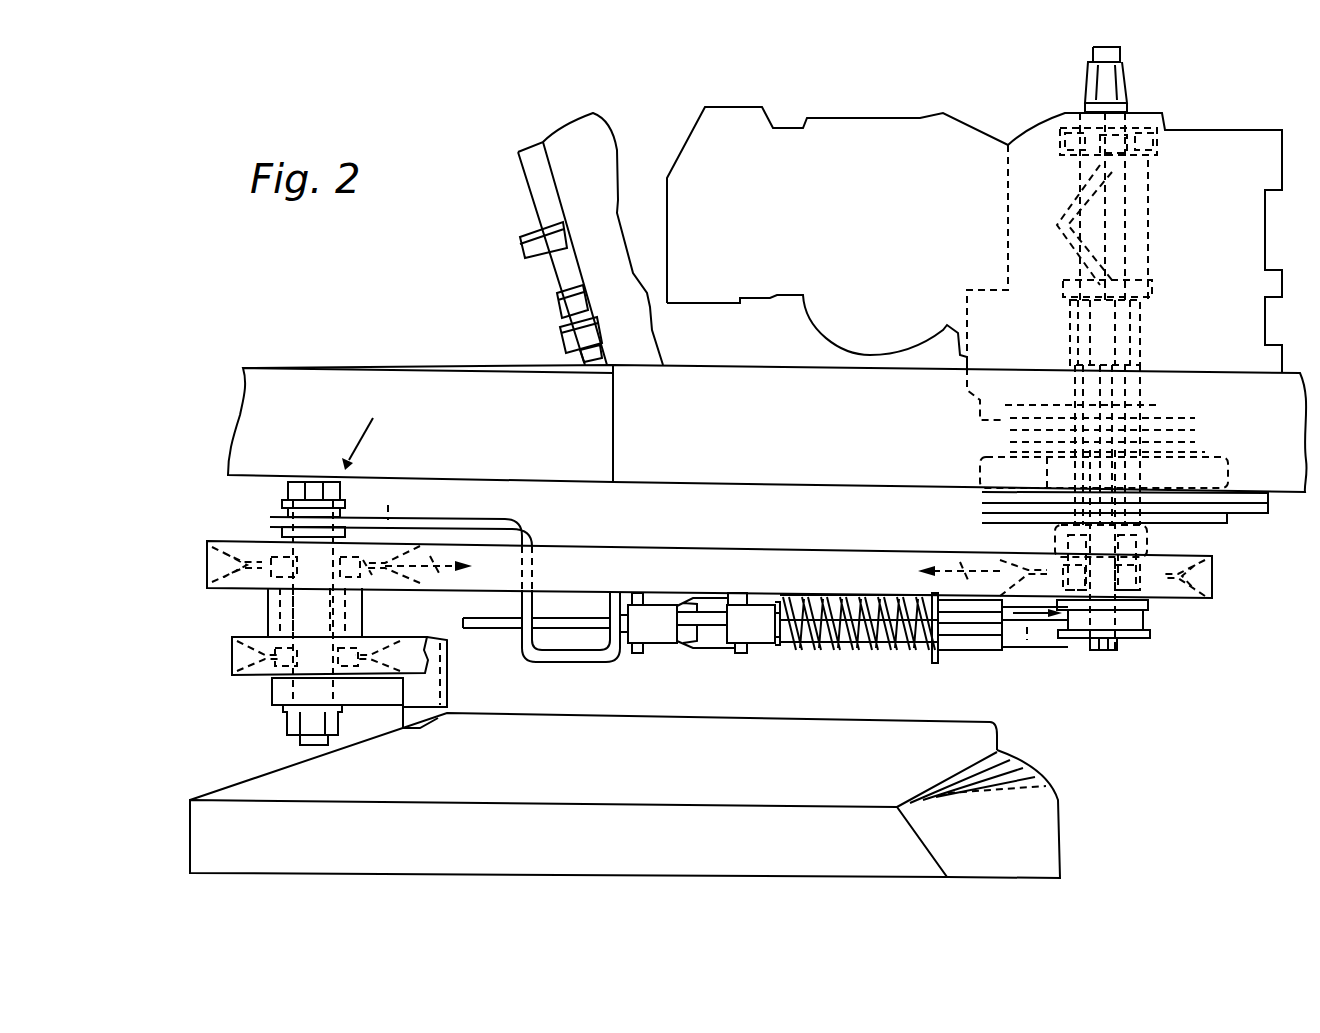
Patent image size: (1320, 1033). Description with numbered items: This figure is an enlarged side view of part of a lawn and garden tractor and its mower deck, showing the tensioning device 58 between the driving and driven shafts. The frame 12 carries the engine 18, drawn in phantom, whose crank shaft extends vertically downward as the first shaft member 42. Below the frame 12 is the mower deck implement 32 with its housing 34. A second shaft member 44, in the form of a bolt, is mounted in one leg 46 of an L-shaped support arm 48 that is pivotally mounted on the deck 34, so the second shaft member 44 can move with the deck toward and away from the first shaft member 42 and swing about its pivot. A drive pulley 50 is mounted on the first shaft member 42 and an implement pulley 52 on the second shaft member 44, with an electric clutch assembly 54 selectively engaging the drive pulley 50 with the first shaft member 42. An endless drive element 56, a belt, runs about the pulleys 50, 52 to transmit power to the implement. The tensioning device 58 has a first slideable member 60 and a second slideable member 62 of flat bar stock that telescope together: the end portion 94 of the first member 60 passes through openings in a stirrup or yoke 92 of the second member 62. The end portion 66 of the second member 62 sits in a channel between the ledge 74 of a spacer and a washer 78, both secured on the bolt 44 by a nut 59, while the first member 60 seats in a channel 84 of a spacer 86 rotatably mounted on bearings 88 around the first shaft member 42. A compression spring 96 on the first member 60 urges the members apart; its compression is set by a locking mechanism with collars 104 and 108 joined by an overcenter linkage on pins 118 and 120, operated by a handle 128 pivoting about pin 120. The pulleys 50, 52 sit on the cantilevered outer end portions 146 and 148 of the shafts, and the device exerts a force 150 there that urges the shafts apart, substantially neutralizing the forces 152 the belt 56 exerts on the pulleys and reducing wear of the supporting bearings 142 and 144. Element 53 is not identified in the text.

The frame 12 is at (506, 416).
The engine 18 is at (1228, 229).
The mower deck implement 32 is at (1092, 807).
The housing 34 is at (720, 779).
The first shaft member 42 is at (1175, 452).
The second shaft member 44 is at (310, 607).
The leg 46 is at (272, 688).
The L-shaped support arm 48 is at (462, 689).
The drive pulley 50 is at (1200, 545).
The implement pulley 52 is at (232, 542).
The lower slide plate 53 is at (232, 654).
The electric clutch assembly 54 is at (1227, 523).
The endless drive element 56 is at (683, 566).
The tensioning device 58 is at (985, 685).
The nut 59 is at (283, 728).
The first slideable member 60 is at (985, 642).
The second slideable member 62 is at (525, 532).
The end portion 66 is at (270, 527).
The ledge 74 is at (278, 512).
The washer 78 is at (315, 482).
The channel 84 is at (1148, 617).
The spacer 86 is at (1150, 637).
The bearings 88 is at (1140, 650).
The stirrup 92 is at (600, 676).
The end portion 94 is at (472, 630).
The compression spring 96 is at (860, 642).
The collar 104 is at (762, 635).
The second collar 108 is at (660, 640).
The pin 118 is at (737, 593).
The pin 120 is at (637, 593).
The handle 128 is at (905, 582).
The supporting bearings 142 is at (1148, 150).
The supporting bearings 144 is at (372, 575).
The cantilevered outer end portion 146 is at (1120, 655).
The cantilevered outer end portion 148 is at (376, 431).
The force 150 is at (388, 520).
The forces 152 is at (433, 560).